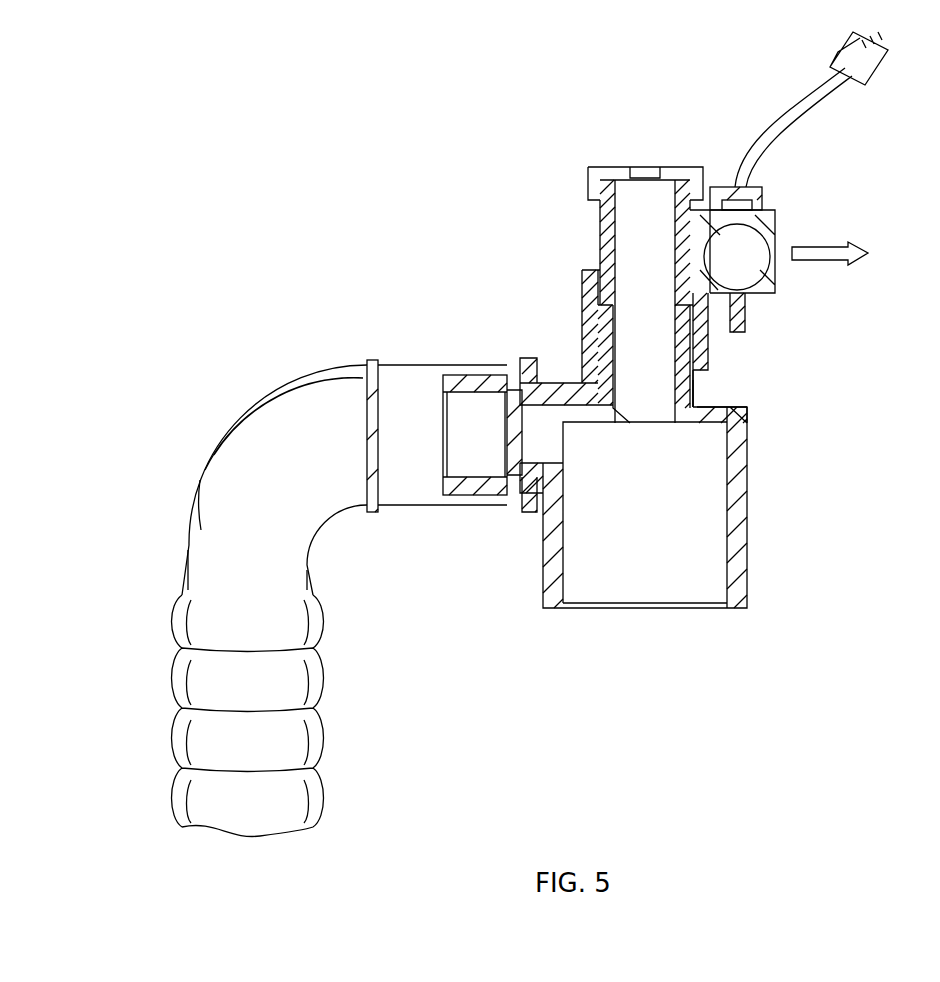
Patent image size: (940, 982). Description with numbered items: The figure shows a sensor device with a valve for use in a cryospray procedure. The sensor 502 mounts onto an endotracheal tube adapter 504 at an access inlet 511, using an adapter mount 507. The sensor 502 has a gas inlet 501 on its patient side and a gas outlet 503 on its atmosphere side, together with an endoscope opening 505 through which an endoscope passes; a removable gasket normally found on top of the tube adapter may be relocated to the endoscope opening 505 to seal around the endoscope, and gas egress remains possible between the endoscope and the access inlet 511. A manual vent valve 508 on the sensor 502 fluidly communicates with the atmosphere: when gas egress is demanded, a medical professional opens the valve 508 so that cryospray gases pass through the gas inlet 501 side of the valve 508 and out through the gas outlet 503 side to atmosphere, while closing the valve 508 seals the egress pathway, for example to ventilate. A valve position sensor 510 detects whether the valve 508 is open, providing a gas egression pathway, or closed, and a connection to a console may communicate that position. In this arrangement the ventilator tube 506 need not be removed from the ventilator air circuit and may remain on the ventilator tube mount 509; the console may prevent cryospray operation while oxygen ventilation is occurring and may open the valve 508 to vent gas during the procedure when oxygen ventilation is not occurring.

The gas inlet 501 is at (610, 282).
The sensor 502 is at (580, 310).
The gas outlet 503 is at (777, 258).
The endotracheal tube adapter 504 is at (747, 548).
The endoscope opening 505 is at (467, 372).
The ventilator tube 506 is at (195, 488).
The adapter mount 507 is at (710, 360).
The manual vent valve 508 is at (777, 232).
The ventilator tube mount 509 is at (513, 378).
The valve position sensor 510 is at (722, 185).
The access inlet 511 is at (697, 392).